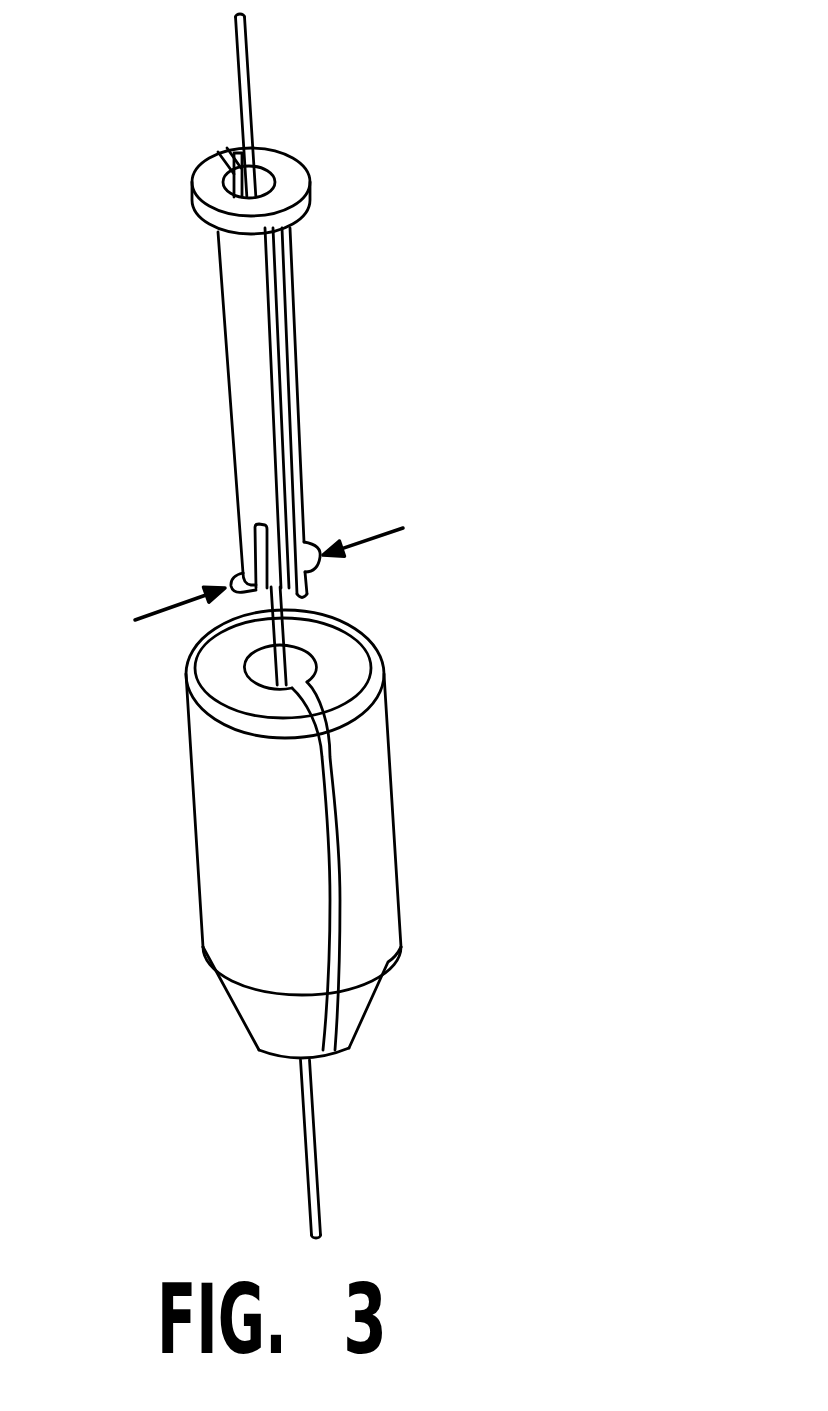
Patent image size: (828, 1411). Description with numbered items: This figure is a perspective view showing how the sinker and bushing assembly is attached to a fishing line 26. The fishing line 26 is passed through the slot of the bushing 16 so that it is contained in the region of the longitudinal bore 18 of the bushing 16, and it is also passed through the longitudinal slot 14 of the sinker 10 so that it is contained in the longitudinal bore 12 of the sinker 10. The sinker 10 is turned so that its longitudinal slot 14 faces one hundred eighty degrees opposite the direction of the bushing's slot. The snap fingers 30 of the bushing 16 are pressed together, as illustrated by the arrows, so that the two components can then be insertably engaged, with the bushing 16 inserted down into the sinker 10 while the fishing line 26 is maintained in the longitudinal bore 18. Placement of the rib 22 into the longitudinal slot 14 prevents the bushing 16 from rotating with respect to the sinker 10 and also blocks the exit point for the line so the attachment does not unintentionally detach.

The sinker 10 is at (220, 883).
The longitudinal bore 12 is at (257, 663).
The longitudinal slot 14 is at (333, 785).
The bushing 16 is at (233, 346).
The longitudinal bore 18 is at (267, 182).
The rib 22 is at (287, 347).
The fishing line 26 is at (247, 88).
The snap fingers 30 is at (240, 570).